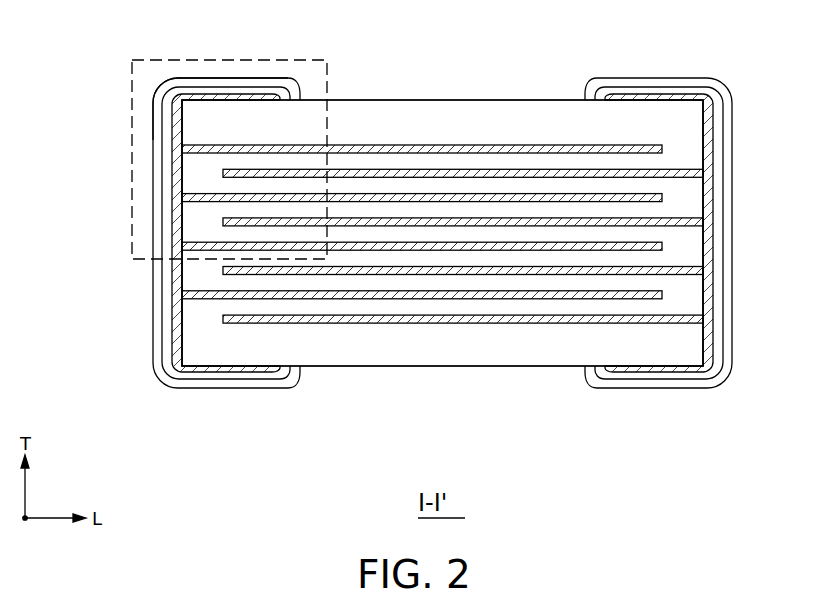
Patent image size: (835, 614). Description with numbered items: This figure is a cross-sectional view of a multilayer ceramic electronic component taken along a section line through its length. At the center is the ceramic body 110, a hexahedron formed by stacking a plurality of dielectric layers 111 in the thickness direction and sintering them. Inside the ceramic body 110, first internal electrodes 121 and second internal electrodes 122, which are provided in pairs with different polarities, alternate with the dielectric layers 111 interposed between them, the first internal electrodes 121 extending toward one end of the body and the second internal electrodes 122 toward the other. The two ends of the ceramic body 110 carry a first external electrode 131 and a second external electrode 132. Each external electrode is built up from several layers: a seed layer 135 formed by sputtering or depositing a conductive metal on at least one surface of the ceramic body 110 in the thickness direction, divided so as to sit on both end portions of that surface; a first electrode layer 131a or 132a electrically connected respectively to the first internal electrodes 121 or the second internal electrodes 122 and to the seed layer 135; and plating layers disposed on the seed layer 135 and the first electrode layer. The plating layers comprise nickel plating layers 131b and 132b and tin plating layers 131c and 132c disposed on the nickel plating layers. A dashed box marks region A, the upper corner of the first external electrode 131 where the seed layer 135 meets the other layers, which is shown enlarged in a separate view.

The ceramic body 110 is at (470, 100).
The dielectric layer 111 is at (685, 196).
The first internal electrode 121 is at (648, 188).
The second internal electrode 122 is at (682, 232).
The first external electrode 131 is at (235, 284).
The first electrode layer 131a is at (173, 317).
The nickel plating layer 131b is at (237, 375).
The tin plating layer 131c is at (160, 446).
The second external electrode 132 is at (649, 284).
The first electrode layer 132a is at (712, 317).
The nickel plating layer 132b is at (650, 375).
The tin plating layer 132c is at (725, 446).
The seed layer 135 is at (212, 90).
The region A is at (132, 126).